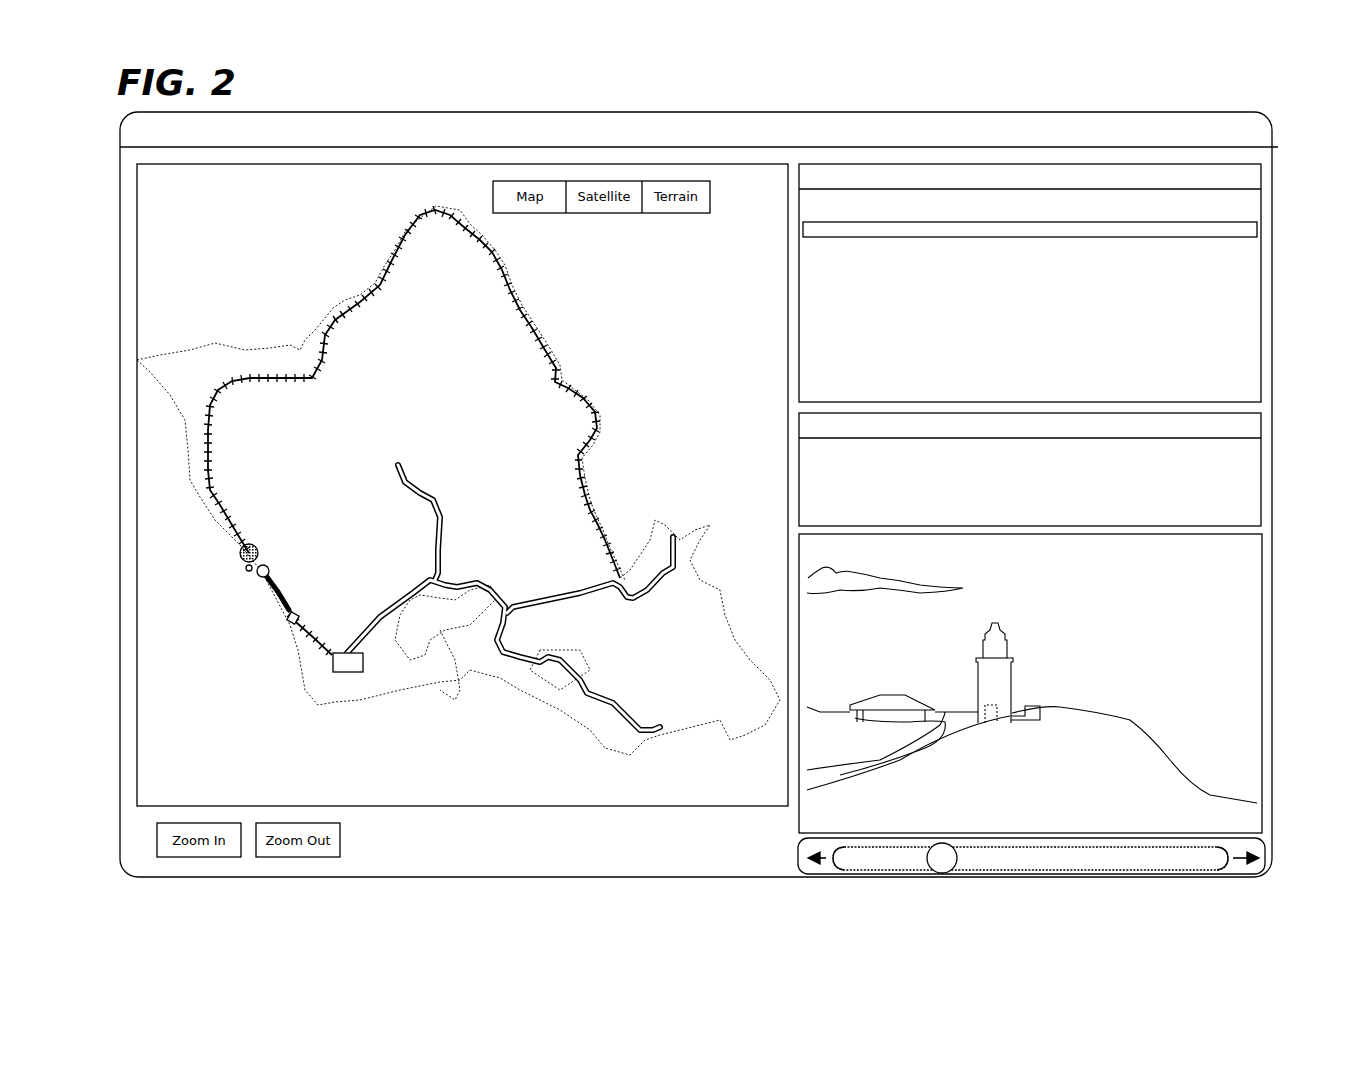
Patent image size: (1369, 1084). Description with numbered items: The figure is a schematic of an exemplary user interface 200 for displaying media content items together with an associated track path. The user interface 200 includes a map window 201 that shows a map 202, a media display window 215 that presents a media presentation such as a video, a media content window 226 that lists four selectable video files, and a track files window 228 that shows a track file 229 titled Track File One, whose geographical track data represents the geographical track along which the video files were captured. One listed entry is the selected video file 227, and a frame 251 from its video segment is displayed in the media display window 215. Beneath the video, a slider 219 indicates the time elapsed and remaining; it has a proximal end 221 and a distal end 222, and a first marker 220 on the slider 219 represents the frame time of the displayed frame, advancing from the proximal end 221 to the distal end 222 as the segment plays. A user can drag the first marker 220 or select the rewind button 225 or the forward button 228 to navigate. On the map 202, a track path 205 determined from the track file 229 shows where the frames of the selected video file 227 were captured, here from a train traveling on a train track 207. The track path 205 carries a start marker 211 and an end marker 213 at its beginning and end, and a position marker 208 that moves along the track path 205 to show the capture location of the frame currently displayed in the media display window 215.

The user interface 200 is at (1312, 79).
The map window 201 is at (137, 455).
The map 202 is at (155, 512).
The track path 205 is at (278, 595).
The train track 207 is at (330, 652).
The position marker 208 is at (257, 572).
The start marker 211 is at (240, 553).
The end marker 213 is at (288, 620).
The media display window 215 is at (1262, 622).
The slider 219 is at (1067, 873).
The first marker 220 is at (942, 873).
The proximal end 221 is at (837, 860).
The distal end 222 is at (1222, 862).
The rewind button 225 is at (821, 868).
The media content window 226 is at (1261, 174).
The selected video file 227 is at (1257, 229).
The track files window 228 is at (1261, 424).
The track file 229 is at (883, 458).
The frame 251 is at (1228, 568).